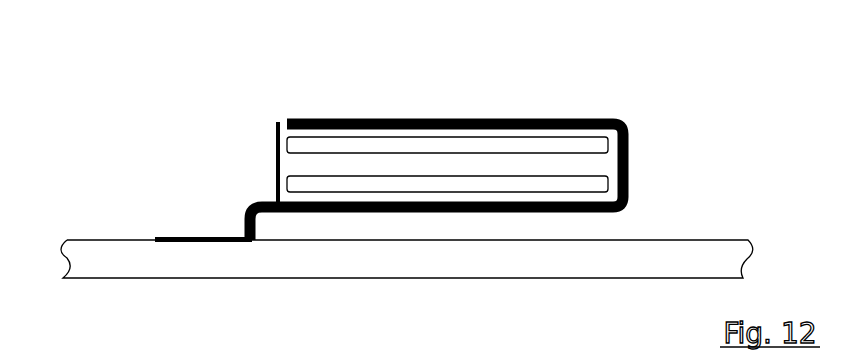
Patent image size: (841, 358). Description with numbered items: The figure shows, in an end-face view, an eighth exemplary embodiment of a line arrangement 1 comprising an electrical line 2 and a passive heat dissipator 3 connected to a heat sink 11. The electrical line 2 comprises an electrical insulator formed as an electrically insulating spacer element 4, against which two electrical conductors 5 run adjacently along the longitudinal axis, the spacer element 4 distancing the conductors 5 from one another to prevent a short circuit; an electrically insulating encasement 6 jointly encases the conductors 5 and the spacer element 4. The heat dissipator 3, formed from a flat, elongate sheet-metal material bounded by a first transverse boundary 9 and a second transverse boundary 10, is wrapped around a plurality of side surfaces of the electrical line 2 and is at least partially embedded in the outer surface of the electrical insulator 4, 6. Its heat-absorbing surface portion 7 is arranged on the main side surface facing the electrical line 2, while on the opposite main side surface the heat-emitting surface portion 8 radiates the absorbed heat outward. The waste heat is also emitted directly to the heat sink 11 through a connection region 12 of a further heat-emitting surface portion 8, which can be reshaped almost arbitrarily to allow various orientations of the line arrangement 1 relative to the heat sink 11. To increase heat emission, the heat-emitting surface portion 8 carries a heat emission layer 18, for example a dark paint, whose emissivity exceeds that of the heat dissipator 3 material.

The line arrangement 1 is at (391, 181).
The electrical line 2 is at (385, 114).
The passive heat dissipator 3 is at (240, 215).
The electrically insulating spacer element 4 is at (239, 157).
The electrical conductors 5 is at (285, 185).
The electrically insulating encasement 6 is at (239, 157).
The heat-absorbing surface portion 7 is at (468, 114).
The heat-emitting surface portion 8 is at (215, 126).
The first transverse boundary 9 is at (297, 120).
The second transverse boundary 10 is at (385, 261).
The heat sink 11 is at (80, 245).
The connection region 12 is at (163, 233).
The heat emission layer 18 is at (644, 156).